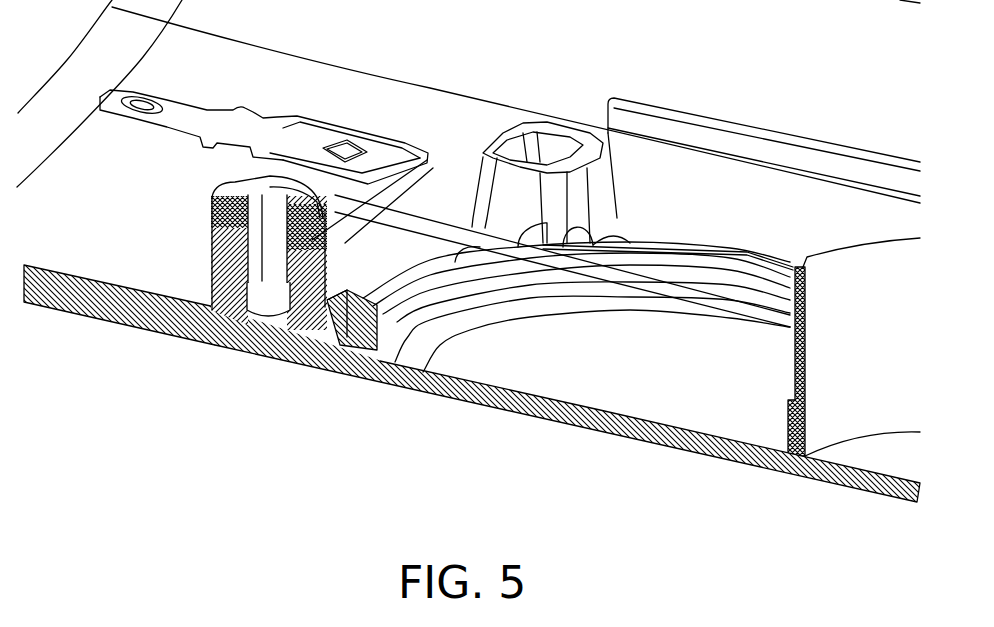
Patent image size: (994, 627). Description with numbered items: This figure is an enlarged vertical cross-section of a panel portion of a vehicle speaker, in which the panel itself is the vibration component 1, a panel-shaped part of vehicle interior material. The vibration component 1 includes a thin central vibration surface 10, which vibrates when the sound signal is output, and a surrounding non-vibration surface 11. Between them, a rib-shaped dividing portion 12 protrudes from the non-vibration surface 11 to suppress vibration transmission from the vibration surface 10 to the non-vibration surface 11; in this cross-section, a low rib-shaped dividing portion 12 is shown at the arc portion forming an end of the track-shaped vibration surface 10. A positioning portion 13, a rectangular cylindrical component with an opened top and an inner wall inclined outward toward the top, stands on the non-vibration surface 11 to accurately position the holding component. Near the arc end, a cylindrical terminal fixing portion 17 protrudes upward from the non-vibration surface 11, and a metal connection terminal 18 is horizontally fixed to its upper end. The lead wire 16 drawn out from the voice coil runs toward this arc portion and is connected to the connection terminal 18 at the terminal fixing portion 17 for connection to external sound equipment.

The vibration component 1 is at (624, 390).
The vibration surface 10 is at (462, 398).
The non-vibration surface 11 is at (84, 312).
The dividing portion 12 is at (400, 313).
The positioning portion 13 is at (558, 148).
The lead wire 16 is at (427, 218).
The terminal fixing portion 17 is at (234, 282).
The connection terminal 18 is at (203, 117).